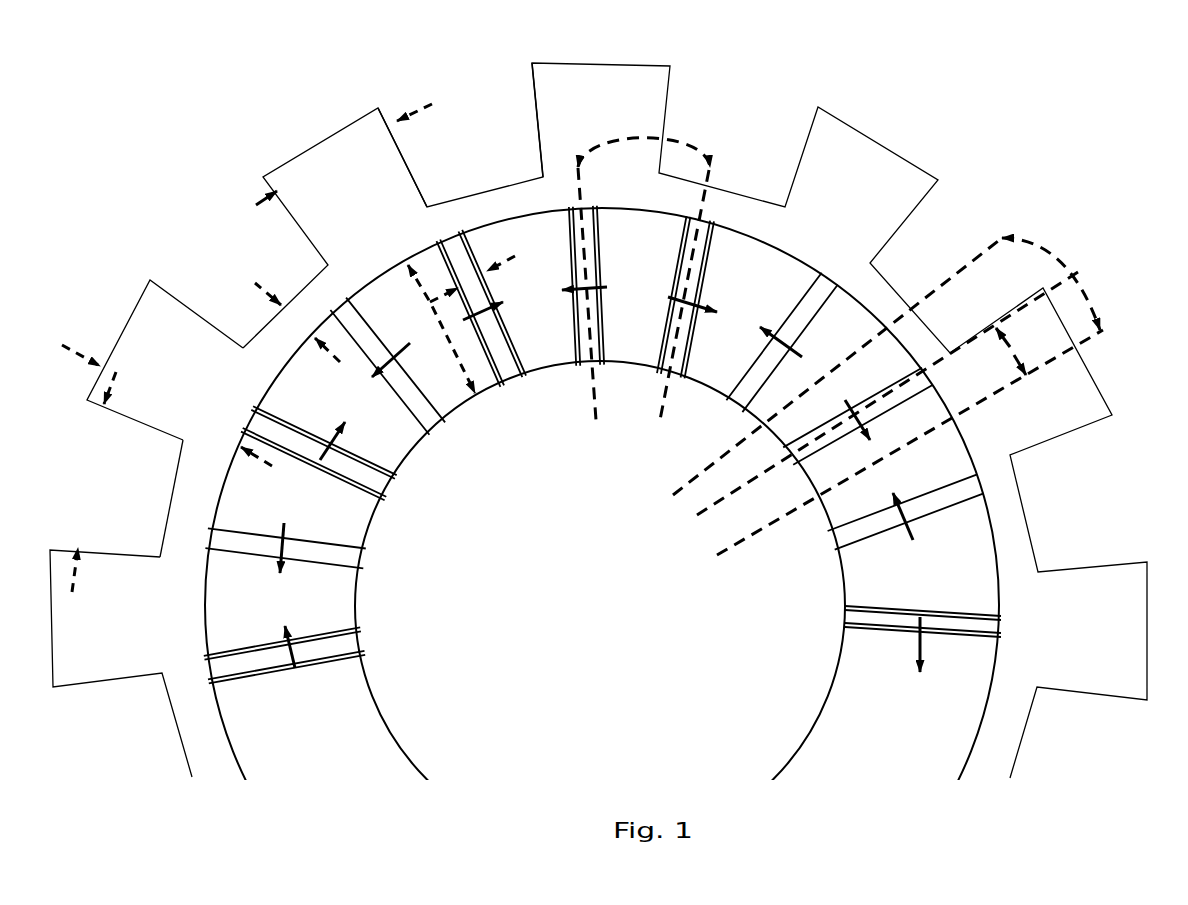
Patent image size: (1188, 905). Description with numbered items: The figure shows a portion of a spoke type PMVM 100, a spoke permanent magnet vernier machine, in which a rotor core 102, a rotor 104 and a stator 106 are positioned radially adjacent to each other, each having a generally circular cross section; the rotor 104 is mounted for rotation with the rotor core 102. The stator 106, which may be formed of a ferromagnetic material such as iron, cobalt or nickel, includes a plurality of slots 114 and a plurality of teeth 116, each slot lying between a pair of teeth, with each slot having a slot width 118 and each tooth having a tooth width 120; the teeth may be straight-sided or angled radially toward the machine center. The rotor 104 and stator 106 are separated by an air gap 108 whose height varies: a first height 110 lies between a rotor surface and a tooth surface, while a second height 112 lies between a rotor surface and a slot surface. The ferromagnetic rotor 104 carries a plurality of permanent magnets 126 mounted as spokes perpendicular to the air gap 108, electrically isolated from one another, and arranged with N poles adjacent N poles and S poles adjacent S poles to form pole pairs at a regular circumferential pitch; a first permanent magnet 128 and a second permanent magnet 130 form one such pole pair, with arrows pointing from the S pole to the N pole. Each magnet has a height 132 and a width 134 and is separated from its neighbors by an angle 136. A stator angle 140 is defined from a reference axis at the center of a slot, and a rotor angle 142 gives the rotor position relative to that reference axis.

The spoke type PMVM 100 is at (190, 123).
The rotor core 102 is at (637, 624).
The rotor 104 is at (387, 702).
The stator 106 is at (151, 278).
The air gap 108 is at (193, 491).
The first height 110 is at (266, 296).
The second height 112 is at (80, 357).
The plurality of slots 114 is at (531, 64).
The plurality of teeth 116 is at (482, 129).
The slot width 118 is at (248, 213).
The tooth width 120 is at (86, 575).
The plurality of permanent magnets 126 is at (432, 417).
The first permanent magnet 128 is at (272, 667).
The second permanent magnet 130 is at (252, 547).
The height 132 is at (437, 317).
The width 134 is at (502, 263).
The angle 136 is at (680, 147).
The stator angle 140 is at (1045, 248).
The rotor angle 142 is at (1009, 346).